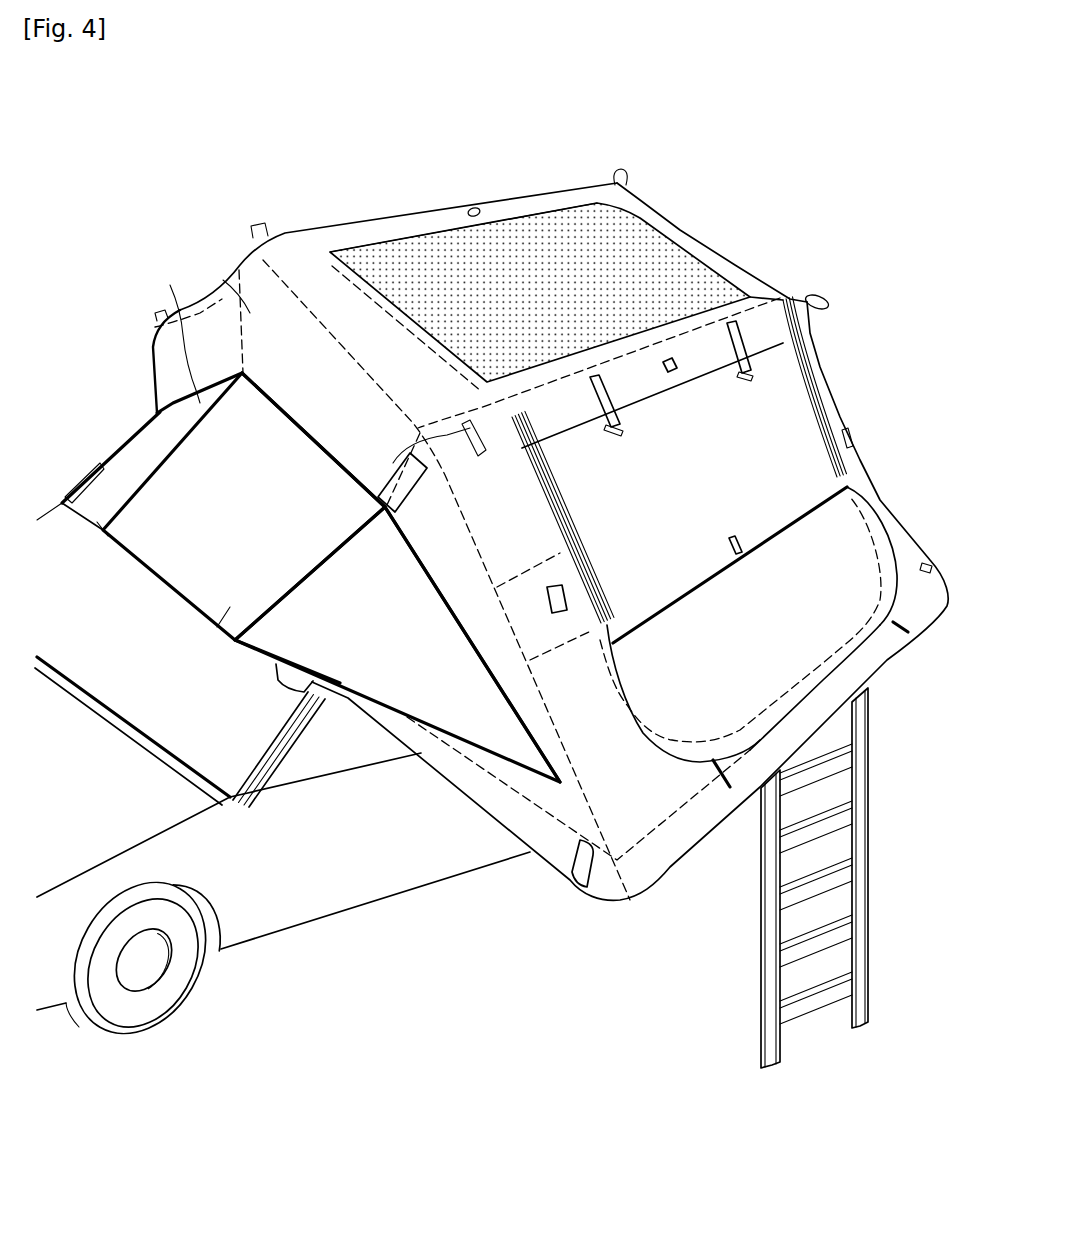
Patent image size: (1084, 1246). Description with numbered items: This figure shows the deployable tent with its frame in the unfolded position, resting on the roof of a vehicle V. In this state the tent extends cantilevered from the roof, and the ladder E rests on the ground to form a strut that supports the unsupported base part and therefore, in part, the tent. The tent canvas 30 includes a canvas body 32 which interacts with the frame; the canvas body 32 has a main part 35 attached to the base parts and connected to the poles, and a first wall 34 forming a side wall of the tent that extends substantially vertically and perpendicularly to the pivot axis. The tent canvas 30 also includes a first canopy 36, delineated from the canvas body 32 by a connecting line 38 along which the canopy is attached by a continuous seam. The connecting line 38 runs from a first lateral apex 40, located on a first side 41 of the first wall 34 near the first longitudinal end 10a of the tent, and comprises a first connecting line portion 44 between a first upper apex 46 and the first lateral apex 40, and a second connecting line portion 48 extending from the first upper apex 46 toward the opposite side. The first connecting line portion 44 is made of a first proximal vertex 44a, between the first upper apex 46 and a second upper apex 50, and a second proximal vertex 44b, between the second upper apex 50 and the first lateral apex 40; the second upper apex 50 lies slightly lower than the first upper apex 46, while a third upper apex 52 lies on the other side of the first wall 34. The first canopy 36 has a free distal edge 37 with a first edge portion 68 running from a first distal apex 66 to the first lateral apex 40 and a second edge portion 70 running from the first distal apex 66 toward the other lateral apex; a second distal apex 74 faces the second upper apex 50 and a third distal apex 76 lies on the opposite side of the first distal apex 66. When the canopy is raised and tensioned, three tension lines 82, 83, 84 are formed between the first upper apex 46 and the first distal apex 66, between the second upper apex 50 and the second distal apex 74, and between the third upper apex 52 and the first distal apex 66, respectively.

The tent canvas 30 is at (533, 198).
The canvas body 32 is at (287, 263).
The first wall 34 is at (227, 292).
The main part 35 is at (353, 327).
The first canopy 36 is at (218, 632).
The free distal edge 37 is at (170, 592).
The connecting line 38 is at (437, 572).
The first lateral apex 40 is at (557, 767).
The first side 41 is at (595, 806).
The first connecting line portion 44 is at (325, 443).
The first proximal vertex 44a is at (300, 421).
The second proximal vertex 44b is at (517, 708).
The first upper apex 46 is at (247, 373).
The second connecting line portion 48 is at (170, 285).
The second upper apex 50 is at (393, 510).
The third upper apex 52 is at (160, 396).
The first distal apex 66 is at (98, 532).
The first edge portion 68 is at (325, 698).
The second edge portion 70 is at (78, 505).
The second distal apex 74 is at (231, 643).
The third distal apex 76 is at (63, 497).
The tension line 82 is at (162, 480).
The tension line 83 is at (337, 553).
The tension line 84 is at (127, 446).
The first longitudinal end 10a is at (650, 902).
The vehicle V is at (333, 840).
The ladder E is at (760, 1010).